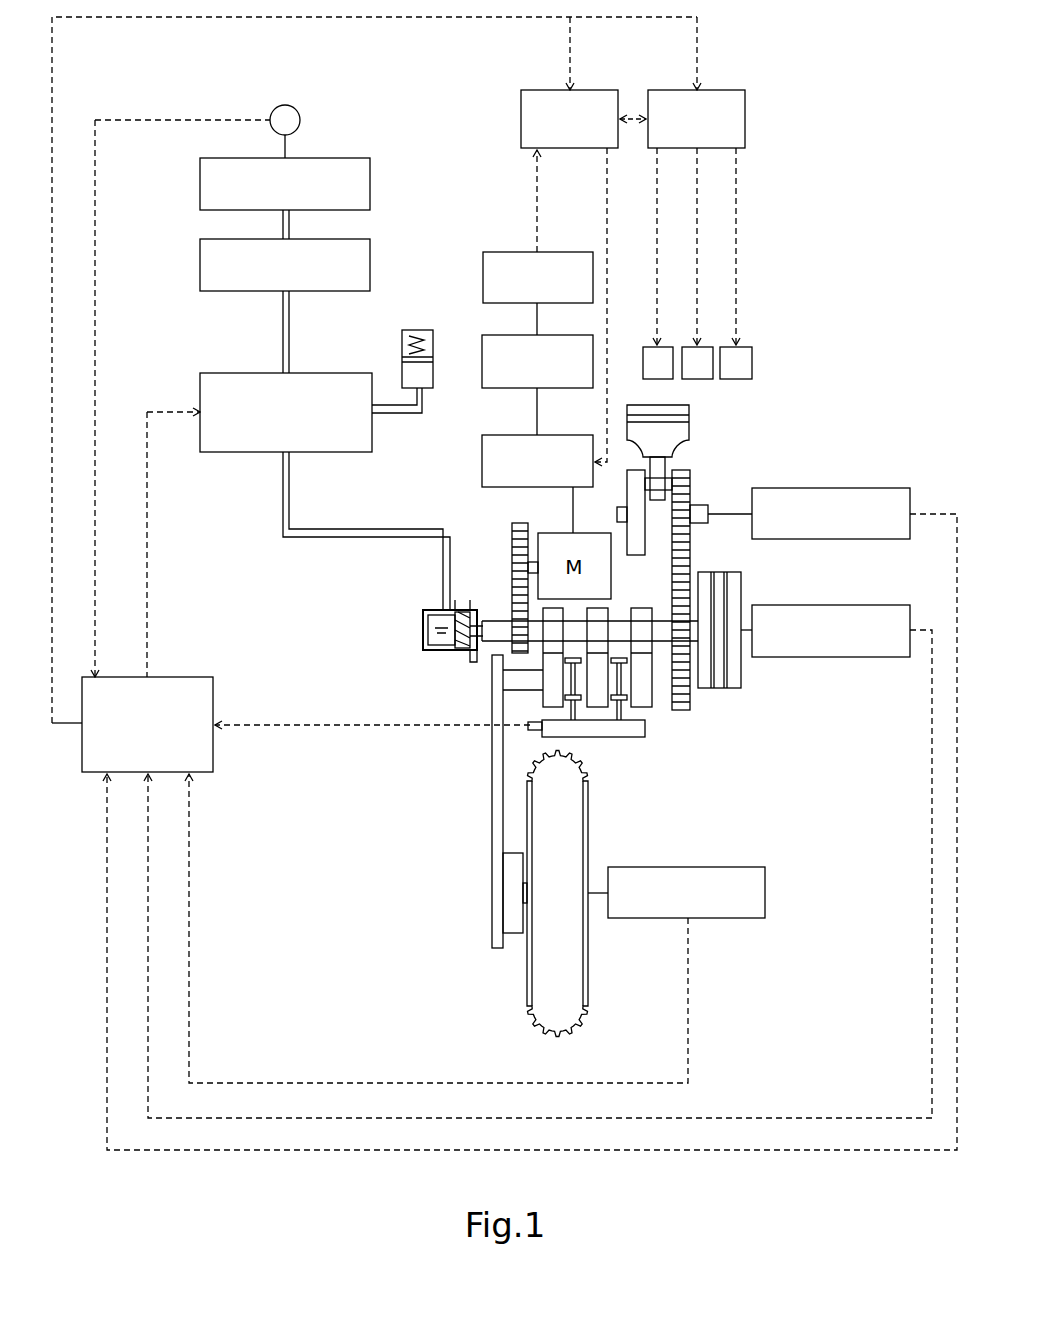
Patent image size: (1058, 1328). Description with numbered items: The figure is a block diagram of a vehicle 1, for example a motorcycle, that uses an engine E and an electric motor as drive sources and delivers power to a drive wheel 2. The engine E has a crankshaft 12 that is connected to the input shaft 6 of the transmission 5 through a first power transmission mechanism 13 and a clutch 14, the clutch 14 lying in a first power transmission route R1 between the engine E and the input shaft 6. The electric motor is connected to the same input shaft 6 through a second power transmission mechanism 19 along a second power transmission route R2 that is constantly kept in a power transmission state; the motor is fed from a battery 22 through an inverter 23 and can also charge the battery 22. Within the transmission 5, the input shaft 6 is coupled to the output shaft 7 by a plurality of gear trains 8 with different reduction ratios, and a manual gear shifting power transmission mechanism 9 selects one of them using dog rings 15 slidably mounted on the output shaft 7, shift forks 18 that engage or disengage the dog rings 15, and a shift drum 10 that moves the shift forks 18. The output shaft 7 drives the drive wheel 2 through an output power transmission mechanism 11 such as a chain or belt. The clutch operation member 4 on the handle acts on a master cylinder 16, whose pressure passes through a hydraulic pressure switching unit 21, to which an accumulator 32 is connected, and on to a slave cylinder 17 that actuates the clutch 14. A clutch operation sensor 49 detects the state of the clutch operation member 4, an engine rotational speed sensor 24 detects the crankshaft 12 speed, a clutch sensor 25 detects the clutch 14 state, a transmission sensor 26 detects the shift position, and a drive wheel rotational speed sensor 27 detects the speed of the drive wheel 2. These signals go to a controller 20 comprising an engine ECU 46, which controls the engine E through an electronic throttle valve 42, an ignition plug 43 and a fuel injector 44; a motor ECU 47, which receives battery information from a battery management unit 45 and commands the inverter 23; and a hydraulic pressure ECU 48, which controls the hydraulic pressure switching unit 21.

The vehicle 1 is at (880, 205).
The drive wheel 2 is at (528, 985).
The clutch operation member 4 is at (200, 181).
The transmission 5 is at (650, 712).
The input shaft 6 is at (500, 621).
The output shaft 7 is at (508, 681).
The gear trains 8 is at (610, 610).
The manual gear shifting power transmission mechanism 9 is at (642, 740).
The shift drum 10 is at (592, 740).
The output power transmission mechanism 11 is at (492, 840).
The crankshaft 12 is at (698, 505).
The first power transmission mechanism 13 is at (690, 566).
The clutch 14 is at (732, 690).
The dog rings 15 is at (630, 662).
The master cylinder 16 is at (200, 262).
The slave cylinder 17 is at (423, 631).
The shift forks 18 is at (572, 702).
The second power transmission mechanism 19 is at (514, 545).
The controller 20 is at (80, 762).
The hydraulic pressure switching unit 21 is at (203, 373).
The battery 22 is at (482, 378).
The inverter 23 is at (482, 461).
The engine rotational speed sensor 24 is at (855, 488).
The clutch sensor 25 is at (845, 657).
The transmission sensor 26 is at (540, 726).
The drive wheel rotational speed sensor 27 is at (765, 893).
The accumulator 32 is at (418, 330).
The electronic throttle valve 42 is at (742, 346).
The ignition plug 43 is at (704, 346).
The fuel injector 44 is at (652, 346).
The battery management unit 45 is at (483, 252).
The engine ECU 46 is at (745, 120).
The motor ECU 47 is at (521, 118).
The hydraulic pressure ECU 48 is at (182, 677).
The clutch operation sensor 49 is at (296, 109).
The engine E is at (689, 410).
The first power transmission route R1 is at (712, 573).
The second power transmission route R2 is at (514, 582).